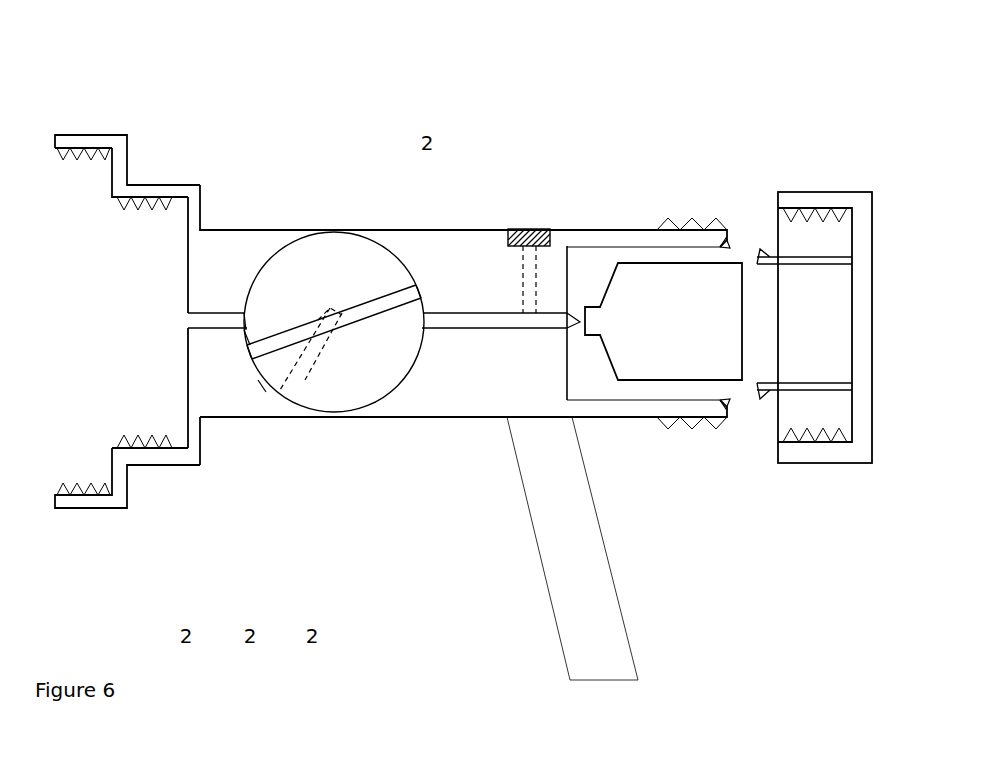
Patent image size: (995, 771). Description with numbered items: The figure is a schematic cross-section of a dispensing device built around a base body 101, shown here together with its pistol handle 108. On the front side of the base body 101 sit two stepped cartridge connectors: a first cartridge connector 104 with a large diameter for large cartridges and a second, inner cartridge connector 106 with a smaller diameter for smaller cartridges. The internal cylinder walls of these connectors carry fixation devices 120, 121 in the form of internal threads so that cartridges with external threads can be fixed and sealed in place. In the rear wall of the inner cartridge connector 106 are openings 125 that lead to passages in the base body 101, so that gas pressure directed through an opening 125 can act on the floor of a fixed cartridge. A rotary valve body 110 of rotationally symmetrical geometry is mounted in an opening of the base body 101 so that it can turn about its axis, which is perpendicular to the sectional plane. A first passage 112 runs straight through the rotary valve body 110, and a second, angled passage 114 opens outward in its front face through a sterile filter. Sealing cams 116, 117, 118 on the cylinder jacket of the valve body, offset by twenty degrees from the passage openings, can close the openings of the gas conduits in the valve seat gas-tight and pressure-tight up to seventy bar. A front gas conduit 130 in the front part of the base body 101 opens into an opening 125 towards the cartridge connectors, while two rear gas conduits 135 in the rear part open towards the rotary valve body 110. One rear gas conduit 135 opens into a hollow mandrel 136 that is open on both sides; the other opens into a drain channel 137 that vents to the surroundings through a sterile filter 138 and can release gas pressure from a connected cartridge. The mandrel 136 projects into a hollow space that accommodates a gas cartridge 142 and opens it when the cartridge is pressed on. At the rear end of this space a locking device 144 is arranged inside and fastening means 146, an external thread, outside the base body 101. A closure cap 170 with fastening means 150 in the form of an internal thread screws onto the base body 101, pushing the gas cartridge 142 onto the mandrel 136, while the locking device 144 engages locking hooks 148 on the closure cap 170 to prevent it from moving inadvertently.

The base body 101 is at (238, 256).
The first cartridge connector 104 is at (122, 143).
The second cartridge connector 106 is at (191, 190).
The pistol handle 108 is at (588, 583).
The rotary valve body 110 is at (312, 255).
The first passage 112 is at (292, 342).
The second passage 114 is at (313, 365).
The sealing cam 116 is at (240, 332).
The sealing cam 117 is at (262, 388).
The sealing cam 118 is at (427, 313).
The fixation device 120 is at (88, 150).
The fixation device 121 is at (145, 450).
The opening in the cartridge connector 125 is at (185, 322).
The front gas conduit 130 is at (232, 318).
The rear gas conduit 135 is at (547, 327).
The hollow mandrel 136 is at (576, 318).
The drain channel 137 is at (527, 290).
The sterile filter 138 is at (532, 231).
The gas cartridge 142 is at (653, 312).
The locking device 144 is at (719, 248).
The fastening means 146 is at (680, 222).
The locking hook 148 is at (790, 259).
The fastening means 150 is at (812, 208).
The closure cap 170 is at (832, 191).